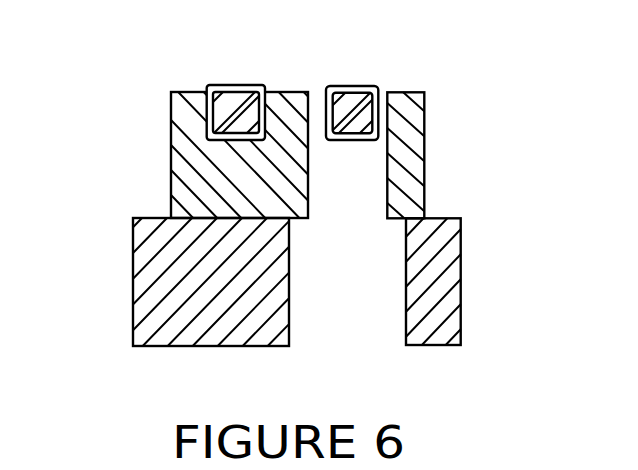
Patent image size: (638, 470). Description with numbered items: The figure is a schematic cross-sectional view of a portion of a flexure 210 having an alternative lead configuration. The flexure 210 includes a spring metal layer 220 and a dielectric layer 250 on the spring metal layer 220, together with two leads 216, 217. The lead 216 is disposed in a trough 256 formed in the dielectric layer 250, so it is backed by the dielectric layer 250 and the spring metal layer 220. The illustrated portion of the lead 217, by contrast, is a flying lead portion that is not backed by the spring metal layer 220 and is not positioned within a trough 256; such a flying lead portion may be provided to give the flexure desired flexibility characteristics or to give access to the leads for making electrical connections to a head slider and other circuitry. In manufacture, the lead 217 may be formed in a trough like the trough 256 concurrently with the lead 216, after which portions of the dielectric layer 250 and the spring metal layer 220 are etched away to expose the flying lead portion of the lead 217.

The flexure 210 is at (176, 114).
The lead 216 is at (175, 97).
The trough 256 is at (195, 75).
The lead 217 is at (362, 87).
The dielectric layer 250 is at (171, 193).
The spring metal layer 220 is at (160, 346).